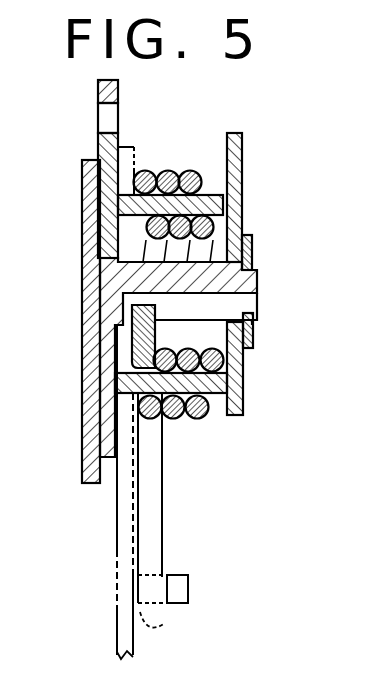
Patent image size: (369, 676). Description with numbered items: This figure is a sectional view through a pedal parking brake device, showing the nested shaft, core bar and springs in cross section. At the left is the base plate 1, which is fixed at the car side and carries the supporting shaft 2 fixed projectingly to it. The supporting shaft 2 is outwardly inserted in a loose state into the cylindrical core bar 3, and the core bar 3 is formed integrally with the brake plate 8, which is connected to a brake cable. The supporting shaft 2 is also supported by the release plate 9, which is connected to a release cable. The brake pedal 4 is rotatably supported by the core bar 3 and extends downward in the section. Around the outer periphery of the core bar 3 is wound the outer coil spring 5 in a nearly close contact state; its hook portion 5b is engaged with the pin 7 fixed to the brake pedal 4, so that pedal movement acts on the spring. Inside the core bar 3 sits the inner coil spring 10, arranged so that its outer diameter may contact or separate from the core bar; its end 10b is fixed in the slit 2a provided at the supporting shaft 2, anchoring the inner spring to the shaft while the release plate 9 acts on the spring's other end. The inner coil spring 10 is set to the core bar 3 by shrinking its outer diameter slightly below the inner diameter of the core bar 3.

The base plate 1 is at (87, 452).
The supporting shaft 2 is at (253, 282).
The slit 2a is at (232, 305).
The core bar 3 is at (212, 190).
The brake pedal 4 is at (117, 613).
The outer coil spring 5 is at (147, 170).
The hook portion 5b is at (166, 623).
The pin 7 is at (174, 578).
The brake plate 8 is at (98, 143).
The release plate 9 is at (247, 398).
The inner coil spring 10 is at (203, 250).
The end of inner coil spring 10b is at (132, 320).